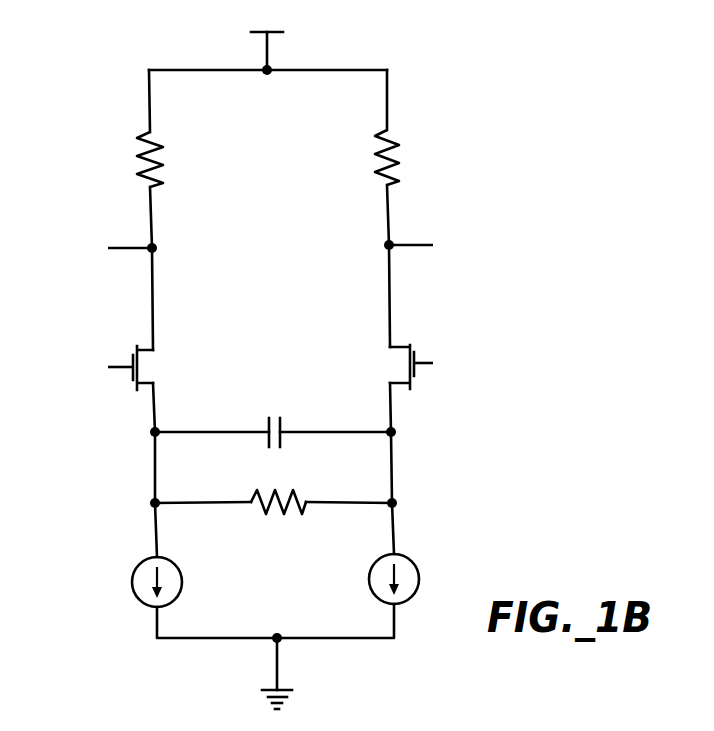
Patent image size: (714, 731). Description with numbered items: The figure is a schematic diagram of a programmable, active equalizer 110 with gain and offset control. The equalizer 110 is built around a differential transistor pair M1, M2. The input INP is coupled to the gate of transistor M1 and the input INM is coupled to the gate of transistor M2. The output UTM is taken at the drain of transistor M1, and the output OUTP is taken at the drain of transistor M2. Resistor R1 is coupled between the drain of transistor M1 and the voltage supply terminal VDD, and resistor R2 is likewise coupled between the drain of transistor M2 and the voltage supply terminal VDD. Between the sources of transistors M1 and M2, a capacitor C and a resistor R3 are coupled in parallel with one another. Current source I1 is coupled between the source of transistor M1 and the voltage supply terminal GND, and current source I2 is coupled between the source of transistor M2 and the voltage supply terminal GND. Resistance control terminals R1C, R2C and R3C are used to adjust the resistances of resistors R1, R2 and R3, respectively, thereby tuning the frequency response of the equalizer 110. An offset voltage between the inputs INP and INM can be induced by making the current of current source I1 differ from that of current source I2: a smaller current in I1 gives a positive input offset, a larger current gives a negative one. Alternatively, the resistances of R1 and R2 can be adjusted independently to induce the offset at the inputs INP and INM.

The equalizer 110 is at (303, 355).
The resistor R1 is at (168, 159).
The resistor R2 is at (405, 157).
The resistor R3 is at (273, 488).
The resistance control terminal R1C is at (128, 159).
The resistance control terminal R2C is at (364, 162).
The resistance control terminal R3C is at (277, 532).
The transistor M1 is at (162, 368).
The transistor M2 is at (382, 367).
The capacitor C is at (273, 415).
The current source I1 is at (171, 582).
The current source I2 is at (408, 579).
The voltage supply terminal VDD is at (268, 38).
The voltage supply terminal GND is at (278, 652).
The output UTM is at (105, 247).
The output OUTP is at (442, 244).
The input INP is at (100, 367).
The input INM is at (448, 364).